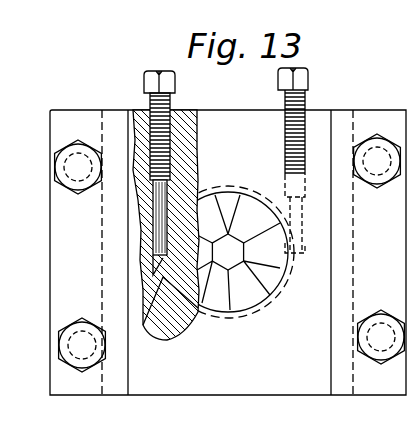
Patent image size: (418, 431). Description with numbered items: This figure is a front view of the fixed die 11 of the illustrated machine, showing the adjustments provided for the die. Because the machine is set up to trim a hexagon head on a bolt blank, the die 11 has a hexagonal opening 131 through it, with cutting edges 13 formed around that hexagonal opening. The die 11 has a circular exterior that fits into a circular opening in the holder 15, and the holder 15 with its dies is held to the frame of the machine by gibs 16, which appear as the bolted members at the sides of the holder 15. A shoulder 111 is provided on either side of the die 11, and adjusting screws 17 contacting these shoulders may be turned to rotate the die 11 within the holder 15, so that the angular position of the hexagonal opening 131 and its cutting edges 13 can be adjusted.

The fixed die 11 is at (250, 305).
The cutting edges 13 is at (227, 252).
The holder 15 is at (221, 119).
The gibs 16 is at (65, 122).
The adjusting screws 17 is at (148, 85).
The shoulder 111 is at (138, 326).
The hexagonal opening 131 is at (217, 264).